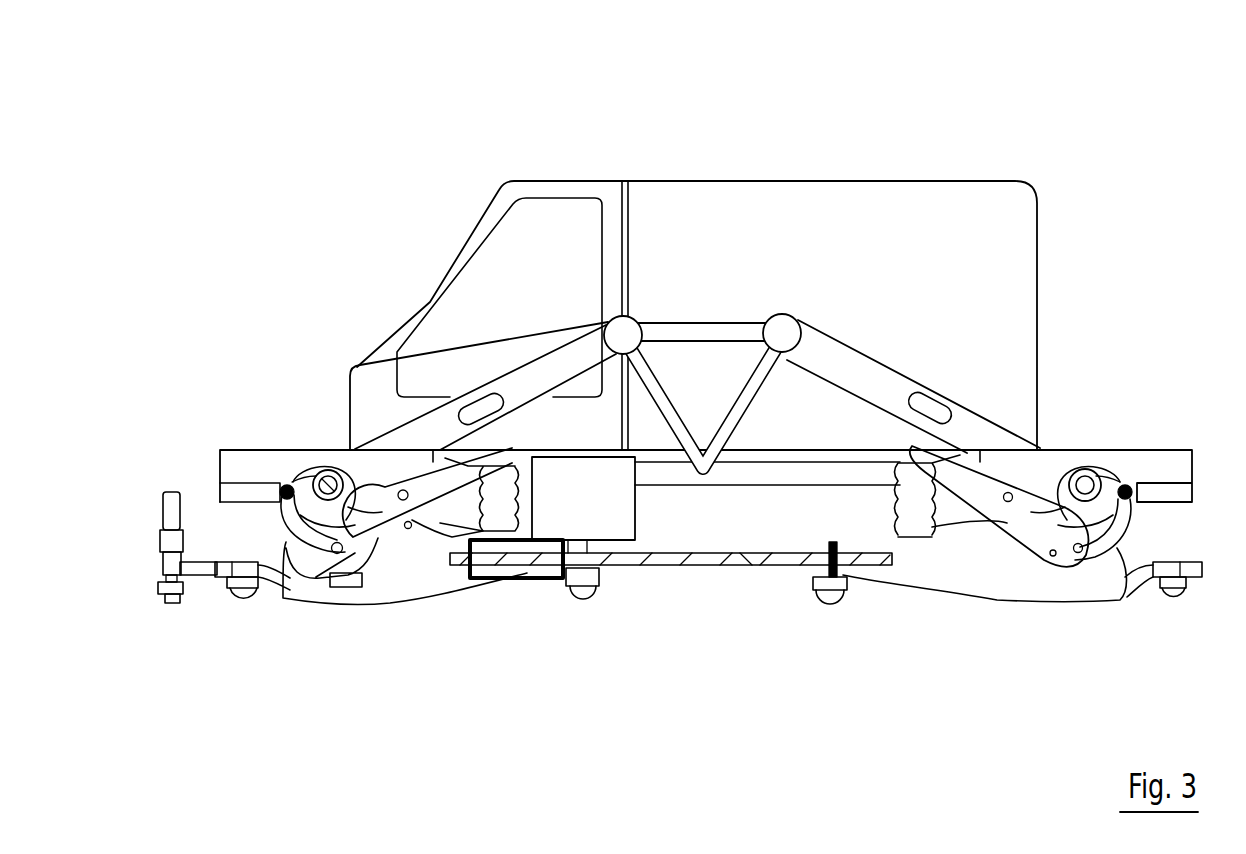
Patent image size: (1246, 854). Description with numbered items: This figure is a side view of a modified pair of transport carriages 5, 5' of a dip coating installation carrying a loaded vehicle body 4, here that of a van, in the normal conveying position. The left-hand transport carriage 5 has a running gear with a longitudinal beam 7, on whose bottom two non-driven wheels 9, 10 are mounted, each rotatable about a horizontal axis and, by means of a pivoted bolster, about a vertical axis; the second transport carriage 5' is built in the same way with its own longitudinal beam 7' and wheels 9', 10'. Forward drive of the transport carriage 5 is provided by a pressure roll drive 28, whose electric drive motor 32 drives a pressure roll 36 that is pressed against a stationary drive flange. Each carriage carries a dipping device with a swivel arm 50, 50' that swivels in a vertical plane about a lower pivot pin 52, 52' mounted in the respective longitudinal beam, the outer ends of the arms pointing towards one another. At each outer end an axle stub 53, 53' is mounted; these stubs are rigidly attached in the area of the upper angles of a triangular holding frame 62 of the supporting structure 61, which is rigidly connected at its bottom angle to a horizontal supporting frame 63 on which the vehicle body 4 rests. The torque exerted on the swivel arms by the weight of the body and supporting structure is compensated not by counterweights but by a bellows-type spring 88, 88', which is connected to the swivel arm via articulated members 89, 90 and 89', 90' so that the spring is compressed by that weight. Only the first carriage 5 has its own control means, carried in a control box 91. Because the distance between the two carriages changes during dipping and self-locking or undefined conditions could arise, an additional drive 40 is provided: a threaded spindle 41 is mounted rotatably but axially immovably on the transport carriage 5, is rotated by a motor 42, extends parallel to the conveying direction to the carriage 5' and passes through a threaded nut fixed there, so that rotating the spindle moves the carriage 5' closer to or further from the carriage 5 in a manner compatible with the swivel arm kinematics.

The vehicle body 4 is at (965, 264).
The transport carriage 5 is at (332, 694).
The second transport carriage 5' is at (1067, 676).
The longitudinal beam 7 is at (427, 574).
The longitudinal beam 7' is at (999, 586).
The wheel 9 is at (236, 630).
The wheel 9' is at (1191, 630).
The wheel 10 is at (580, 634).
The wheel 10' is at (838, 620).
The pressure roll drive 28 is at (172, 458).
The electric drive motor 32 is at (193, 507).
The pressure roll 36 is at (157, 583).
The additional drive 40 is at (692, 585).
The threaded spindle 41 is at (745, 567).
The motor 42 is at (527, 583).
The swivel arm 50 is at (483, 286).
The swivel arm 50' is at (913, 260).
The lower pivot pin 52 is at (326, 411).
The lower pivot pin 52' is at (1099, 411).
The axle stub 53 is at (611, 211).
The axle stub 53' is at (801, 210).
The supporting structure 61 is at (686, 316).
The triangular holding frame 62 is at (746, 410).
The supporting frame 63 is at (651, 470).
The bellows-type spring 88 is at (478, 579).
The bellows-type spring 88' is at (920, 577).
The articulated member 89 is at (392, 610).
The articulated member 89' is at (998, 594).
The articulated member 90 is at (307, 598).
The articulated member 90' is at (1117, 599).
The control box 91 is at (598, 515).